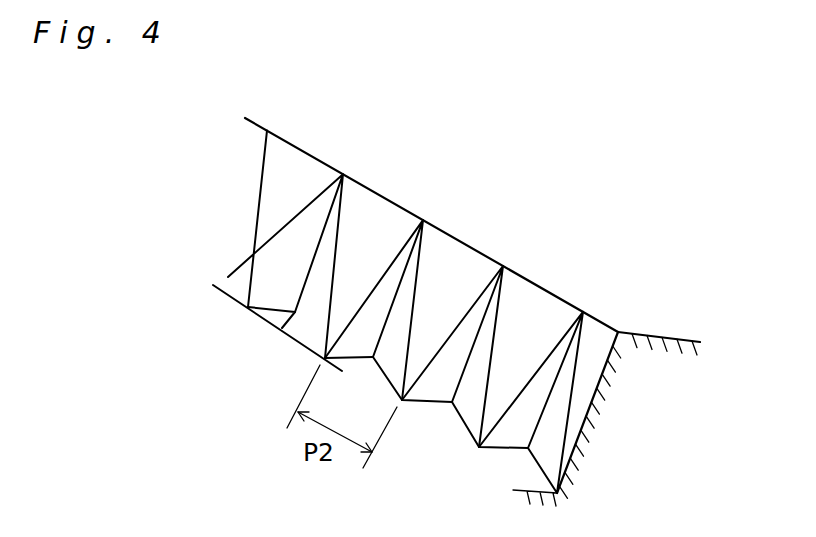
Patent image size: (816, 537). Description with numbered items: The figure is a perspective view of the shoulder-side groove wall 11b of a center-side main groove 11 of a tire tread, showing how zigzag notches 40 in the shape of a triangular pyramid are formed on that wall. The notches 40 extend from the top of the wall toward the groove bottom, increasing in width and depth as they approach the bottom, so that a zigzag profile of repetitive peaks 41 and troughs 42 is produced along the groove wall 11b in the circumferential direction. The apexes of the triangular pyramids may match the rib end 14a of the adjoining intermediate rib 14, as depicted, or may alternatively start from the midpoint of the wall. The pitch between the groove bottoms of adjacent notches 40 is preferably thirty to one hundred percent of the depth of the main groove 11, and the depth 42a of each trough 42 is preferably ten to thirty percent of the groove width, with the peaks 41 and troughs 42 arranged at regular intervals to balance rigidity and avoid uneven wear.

The rib end 14a is at (383, 192).
The intermediate rib 14 is at (663, 287).
The main groove 11 is at (267, 342).
The shoulder-side groove wall 11b is at (459, 260).
The peak 41 is at (523, 313).
The notch 40 is at (448, 386).
The trough 42 is at (547, 402).
The depth of the trough 42a is at (290, 321).